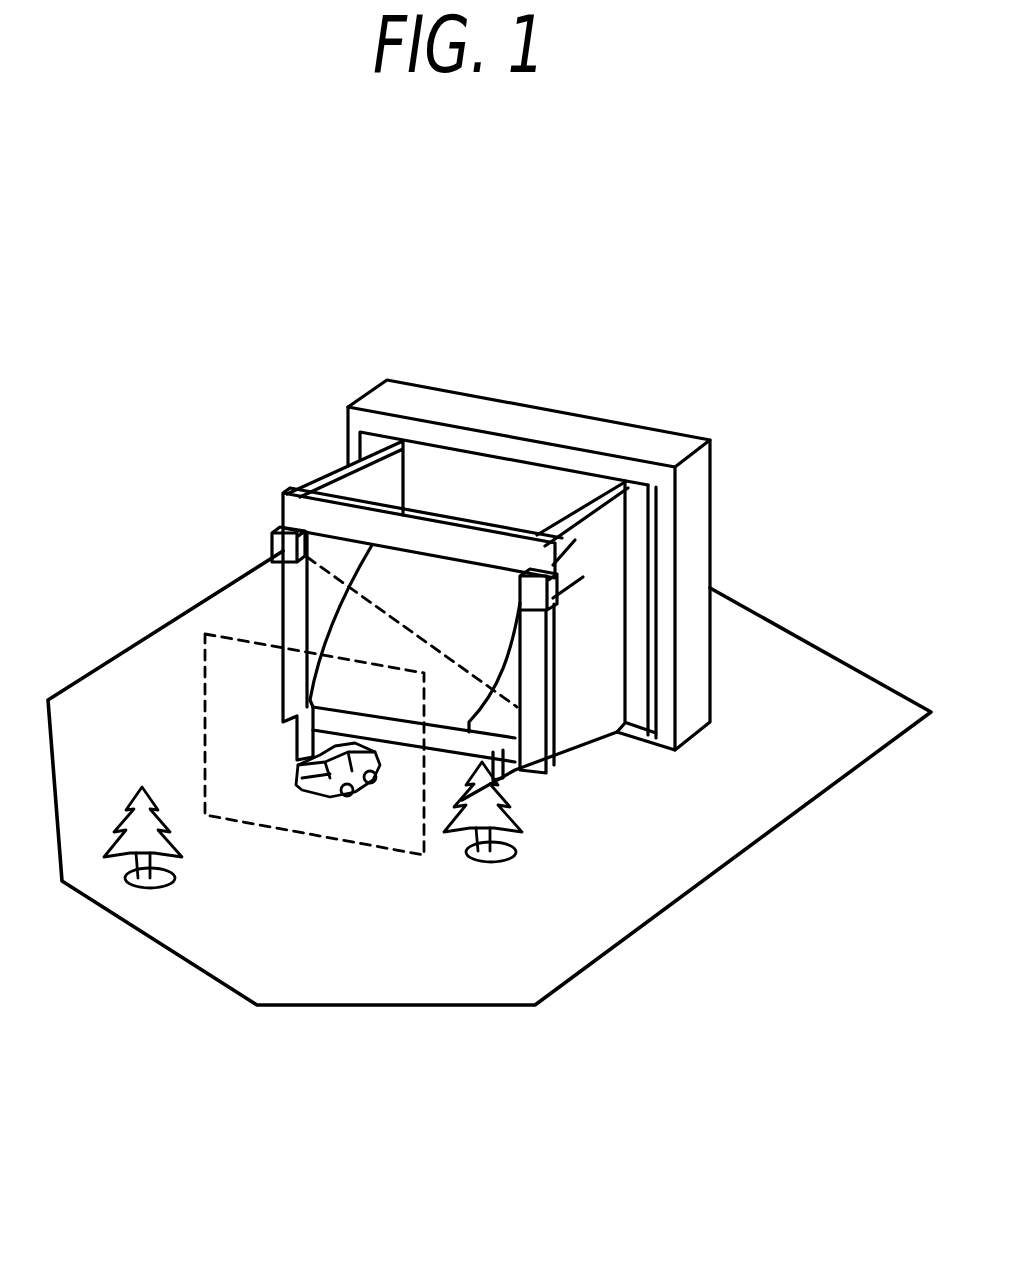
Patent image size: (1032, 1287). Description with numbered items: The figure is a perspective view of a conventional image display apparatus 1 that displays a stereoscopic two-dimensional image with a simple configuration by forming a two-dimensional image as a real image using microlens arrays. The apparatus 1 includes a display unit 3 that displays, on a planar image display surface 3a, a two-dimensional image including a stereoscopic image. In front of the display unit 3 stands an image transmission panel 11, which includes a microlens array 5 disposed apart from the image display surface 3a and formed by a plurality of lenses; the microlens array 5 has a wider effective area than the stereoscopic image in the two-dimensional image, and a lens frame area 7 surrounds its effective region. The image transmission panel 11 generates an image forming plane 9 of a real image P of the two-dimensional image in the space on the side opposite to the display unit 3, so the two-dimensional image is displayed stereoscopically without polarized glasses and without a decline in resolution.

The image display apparatus 1 is at (607, 320).
The display unit 3 is at (646, 440).
The image display surface 3a is at (472, 492).
The microlens array 5 is at (533, 652).
The lens frame area 7 is at (467, 655).
The image forming plane 9 is at (378, 860).
The image transmission panel 11 is at (280, 613).
The real image P is at (303, 800).